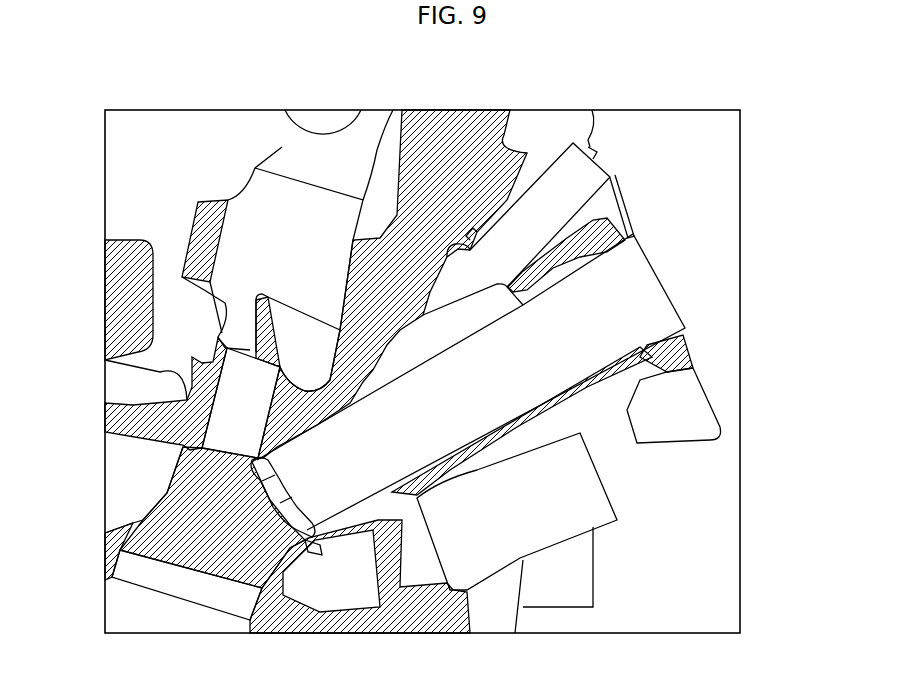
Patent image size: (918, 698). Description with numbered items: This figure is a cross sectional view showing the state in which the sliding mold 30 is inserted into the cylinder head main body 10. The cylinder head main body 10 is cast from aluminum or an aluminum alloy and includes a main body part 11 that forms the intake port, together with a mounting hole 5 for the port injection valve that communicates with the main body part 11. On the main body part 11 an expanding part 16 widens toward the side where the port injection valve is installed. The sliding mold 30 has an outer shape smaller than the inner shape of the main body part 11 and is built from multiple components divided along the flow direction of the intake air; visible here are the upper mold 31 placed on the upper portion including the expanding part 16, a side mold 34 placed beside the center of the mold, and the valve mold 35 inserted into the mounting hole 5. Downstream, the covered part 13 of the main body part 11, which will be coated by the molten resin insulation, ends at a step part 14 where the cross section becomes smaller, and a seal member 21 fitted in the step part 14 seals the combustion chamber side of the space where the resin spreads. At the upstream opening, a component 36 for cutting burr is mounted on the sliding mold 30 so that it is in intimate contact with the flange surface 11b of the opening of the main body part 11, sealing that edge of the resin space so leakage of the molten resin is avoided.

The cylinder head main body 10 is at (103, 266).
The upper mold 31 is at (420, 328).
The expanding part 16 is at (458, 247).
The valve mold 35 is at (563, 178).
The mounting hole 5 is at (597, 217).
The component for cutting burr 36 is at (630, 240).
The side mold 34 is at (503, 397).
The sliding mold 30 is at (668, 250).
The seal member 21 is at (265, 497).
The flange surface 11b is at (684, 352).
The main body part 11 is at (607, 392).
The covered part 13 is at (510, 427).
The step part 14 is at (320, 560).